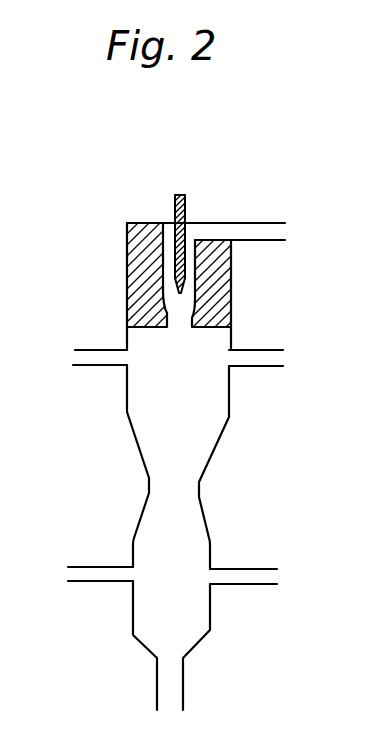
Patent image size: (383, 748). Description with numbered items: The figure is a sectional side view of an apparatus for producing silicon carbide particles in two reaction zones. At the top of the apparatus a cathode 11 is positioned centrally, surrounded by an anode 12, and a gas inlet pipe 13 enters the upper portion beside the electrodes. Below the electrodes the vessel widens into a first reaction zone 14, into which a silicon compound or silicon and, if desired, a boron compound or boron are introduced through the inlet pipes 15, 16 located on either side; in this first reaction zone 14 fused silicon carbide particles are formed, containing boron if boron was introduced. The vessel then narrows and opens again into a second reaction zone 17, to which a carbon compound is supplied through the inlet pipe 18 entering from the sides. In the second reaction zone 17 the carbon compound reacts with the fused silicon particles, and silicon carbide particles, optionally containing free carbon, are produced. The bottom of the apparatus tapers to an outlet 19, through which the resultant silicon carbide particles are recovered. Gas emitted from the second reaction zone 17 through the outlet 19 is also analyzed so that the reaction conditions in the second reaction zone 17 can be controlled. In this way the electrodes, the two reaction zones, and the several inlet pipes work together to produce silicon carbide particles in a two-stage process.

The cathode 11 is at (175, 210).
The anode 12 is at (222, 280).
The gas inlet pipe 13 is at (277, 232).
The first reaction zone 14 is at (212, 402).
The inlet pipe 15 is at (277, 362).
The inlet pipe 16 is at (75, 355).
The second reaction zone 17 is at (196, 616).
The inlet pipe 18 is at (68, 574).
The outlet 19 is at (173, 697).